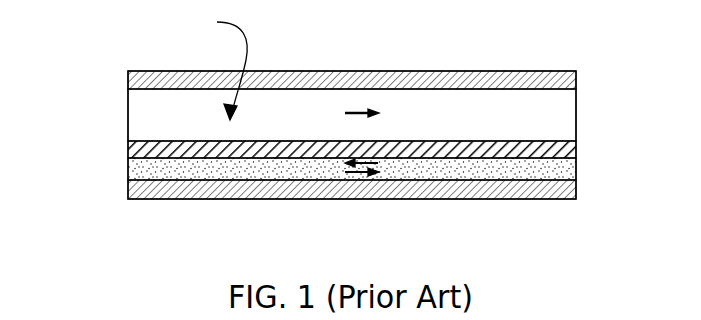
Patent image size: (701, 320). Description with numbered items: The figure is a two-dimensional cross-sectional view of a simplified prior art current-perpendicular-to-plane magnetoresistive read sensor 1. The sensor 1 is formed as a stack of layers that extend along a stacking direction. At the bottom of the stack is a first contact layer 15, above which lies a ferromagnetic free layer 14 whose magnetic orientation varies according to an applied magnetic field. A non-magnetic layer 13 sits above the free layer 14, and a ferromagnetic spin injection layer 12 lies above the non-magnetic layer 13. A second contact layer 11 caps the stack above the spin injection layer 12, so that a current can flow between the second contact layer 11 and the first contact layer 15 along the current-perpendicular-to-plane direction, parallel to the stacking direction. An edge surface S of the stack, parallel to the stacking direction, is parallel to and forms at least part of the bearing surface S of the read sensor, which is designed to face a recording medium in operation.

The current-perpendicular-to-plane magnetoresistive read sensor 1 is at (542, 242).
The second contact layer 11 is at (128, 80).
The spin injection layer 12 is at (148, 122).
The non-magnetic layer 13 is at (577, 146).
The free layer 14 is at (128, 168).
The first contact layer 15 is at (128, 192).
The edge surface S is at (214, 64).